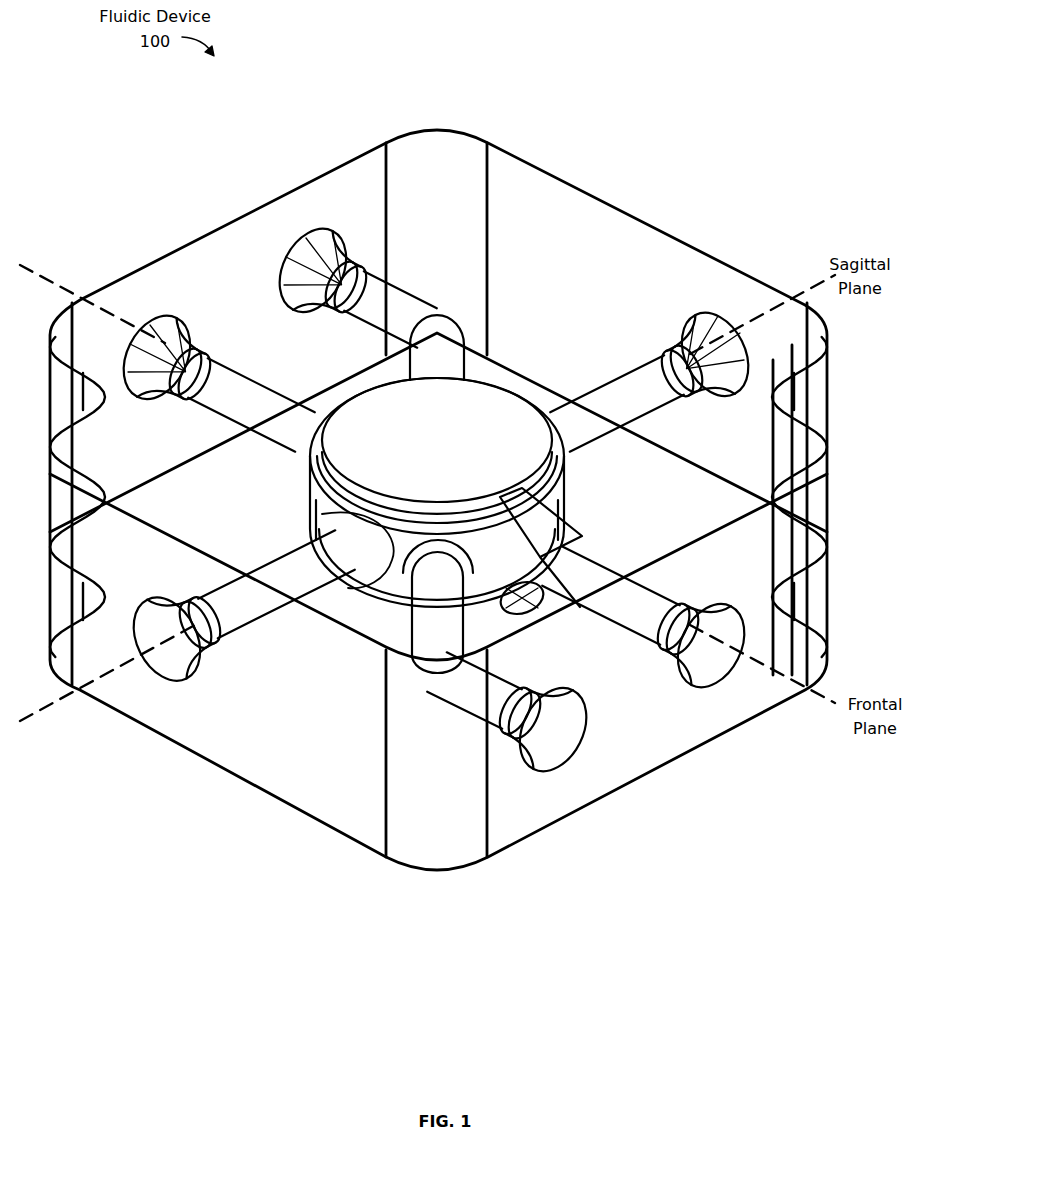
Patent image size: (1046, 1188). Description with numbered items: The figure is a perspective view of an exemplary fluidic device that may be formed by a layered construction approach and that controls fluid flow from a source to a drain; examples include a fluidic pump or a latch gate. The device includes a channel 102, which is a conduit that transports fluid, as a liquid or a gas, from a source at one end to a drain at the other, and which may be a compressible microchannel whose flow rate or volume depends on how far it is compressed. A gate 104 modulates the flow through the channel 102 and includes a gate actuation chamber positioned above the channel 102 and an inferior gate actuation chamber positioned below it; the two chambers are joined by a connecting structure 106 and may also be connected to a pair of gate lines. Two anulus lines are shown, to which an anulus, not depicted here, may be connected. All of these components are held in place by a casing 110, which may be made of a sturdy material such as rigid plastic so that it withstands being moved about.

The casing 110 is at (558, 180).
The gate 104 is at (395, 408).
The connecting structure 106 is at (580, 613).
The channel 102 is at (262, 598).